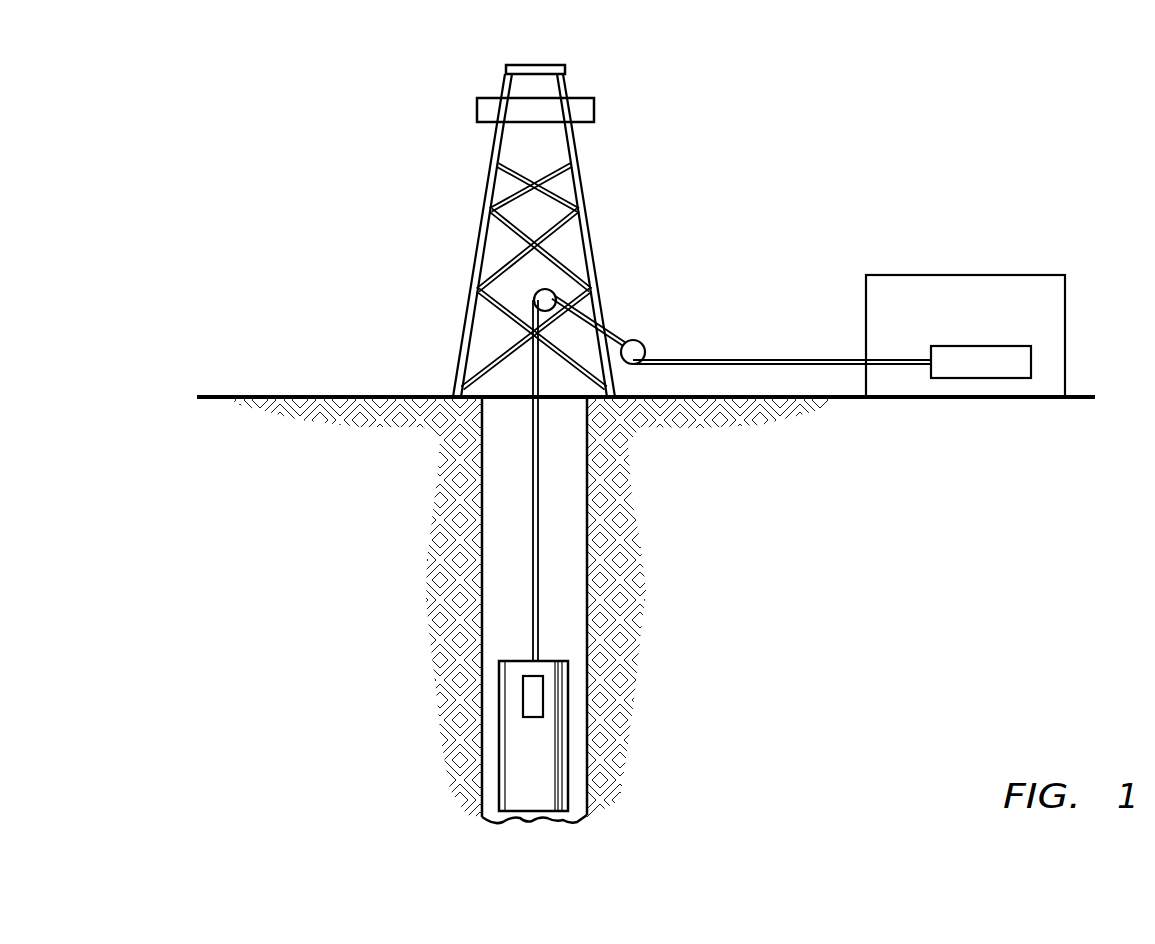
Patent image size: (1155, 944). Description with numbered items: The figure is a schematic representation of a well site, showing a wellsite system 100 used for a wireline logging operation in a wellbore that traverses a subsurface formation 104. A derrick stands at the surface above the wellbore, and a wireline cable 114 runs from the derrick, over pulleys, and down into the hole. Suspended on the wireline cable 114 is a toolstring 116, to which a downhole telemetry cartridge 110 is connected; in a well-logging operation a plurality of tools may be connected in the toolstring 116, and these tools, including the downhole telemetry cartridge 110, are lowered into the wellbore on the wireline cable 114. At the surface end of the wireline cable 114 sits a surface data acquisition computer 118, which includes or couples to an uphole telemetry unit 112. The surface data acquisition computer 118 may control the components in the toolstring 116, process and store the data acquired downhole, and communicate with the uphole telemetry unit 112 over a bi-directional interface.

The wellsite system 100 is at (864, 92).
The subsurface formation 104 is at (915, 605).
The downhole telemetry cartridge 110 is at (542, 698).
The uphole telemetry unit 112 is at (955, 345).
The wireline cable 114 is at (705, 358).
The toolstring 116 is at (530, 813).
The surface data acquisition computer 118 is at (952, 274).